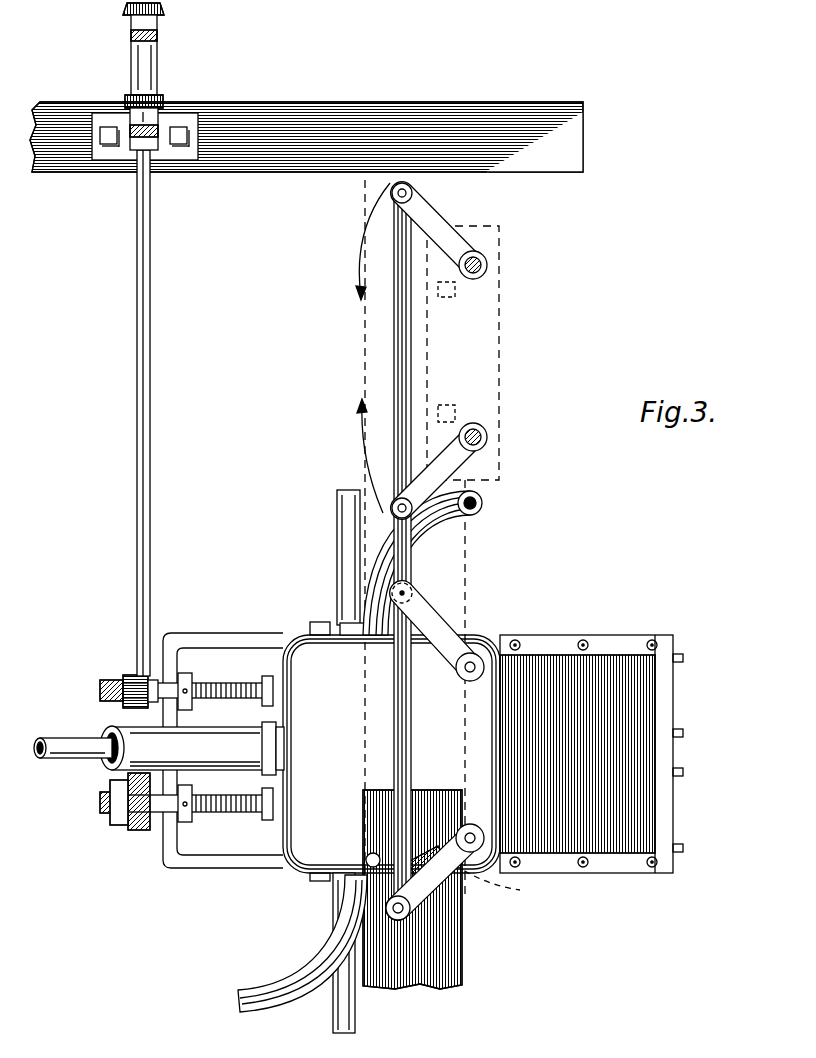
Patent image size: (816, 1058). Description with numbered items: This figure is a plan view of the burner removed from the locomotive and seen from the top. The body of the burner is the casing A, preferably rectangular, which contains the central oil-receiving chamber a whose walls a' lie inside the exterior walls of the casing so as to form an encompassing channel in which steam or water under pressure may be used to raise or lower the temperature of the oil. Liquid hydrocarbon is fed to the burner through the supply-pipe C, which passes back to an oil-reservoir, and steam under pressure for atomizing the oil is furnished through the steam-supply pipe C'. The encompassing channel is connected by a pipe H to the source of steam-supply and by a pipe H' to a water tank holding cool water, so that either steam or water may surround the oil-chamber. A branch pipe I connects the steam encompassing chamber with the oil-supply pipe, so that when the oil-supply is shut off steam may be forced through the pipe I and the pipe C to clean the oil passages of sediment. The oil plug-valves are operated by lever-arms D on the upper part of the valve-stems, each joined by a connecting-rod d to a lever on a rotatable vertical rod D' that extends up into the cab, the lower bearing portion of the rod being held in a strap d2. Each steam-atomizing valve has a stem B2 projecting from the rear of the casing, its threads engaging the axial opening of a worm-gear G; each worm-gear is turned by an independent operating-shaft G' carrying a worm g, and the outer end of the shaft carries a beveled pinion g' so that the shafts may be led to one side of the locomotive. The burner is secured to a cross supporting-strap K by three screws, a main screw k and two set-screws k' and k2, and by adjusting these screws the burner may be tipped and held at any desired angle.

The beveled pinion g' is at (146, 76).
The operating-shaft G' is at (114, 413).
The oil-receiving chamber a is at (365, 391).
The chamber walls a' is at (464, 351).
The rotatable vertical rod D' is at (505, 354).
The strap d2 is at (499, 342).
The steam pipe H is at (422, 563).
The steam-supply pipe C' is at (356, 769).
The lever-arm D is at (449, 759).
The valve stem B2 is at (215, 690).
The worm g is at (119, 677).
The worm-gear G is at (114, 819).
The branch pipe I is at (55, 740).
The supply-pipe C is at (166, 770).
The casing A is at (391, 540).
The connecting-rod d is at (411, 743).
The set-screw k' is at (353, 841).
The main screw k is at (429, 849).
The set-screw k2 is at (505, 888).
The water pipe H' is at (302, 943).
The cross supporting-strap K is at (412, 889).